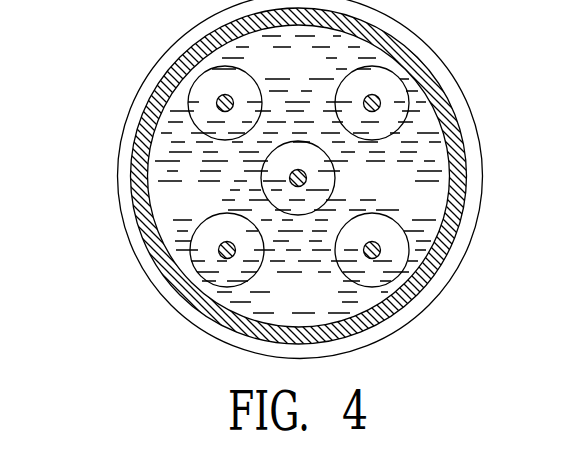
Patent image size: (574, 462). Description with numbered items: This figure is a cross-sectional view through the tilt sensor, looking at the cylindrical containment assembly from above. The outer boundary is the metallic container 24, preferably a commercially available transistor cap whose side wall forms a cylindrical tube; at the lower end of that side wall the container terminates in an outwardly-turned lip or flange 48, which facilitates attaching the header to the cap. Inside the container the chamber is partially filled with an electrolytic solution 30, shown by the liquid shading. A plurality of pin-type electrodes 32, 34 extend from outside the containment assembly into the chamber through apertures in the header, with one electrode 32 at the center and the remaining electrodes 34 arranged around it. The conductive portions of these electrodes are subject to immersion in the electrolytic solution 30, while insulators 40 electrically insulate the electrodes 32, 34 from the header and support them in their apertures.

The metallic container 24 is at (155, 92).
The electrolytic solution 30 is at (318, 303).
The pin-type electrode 32 is at (306, 178).
The pin-type electrodes 34 is at (363, 103).
The insulators 40 is at (237, 92).
The outwardly-turned lip or flange 48 is at (119, 213).